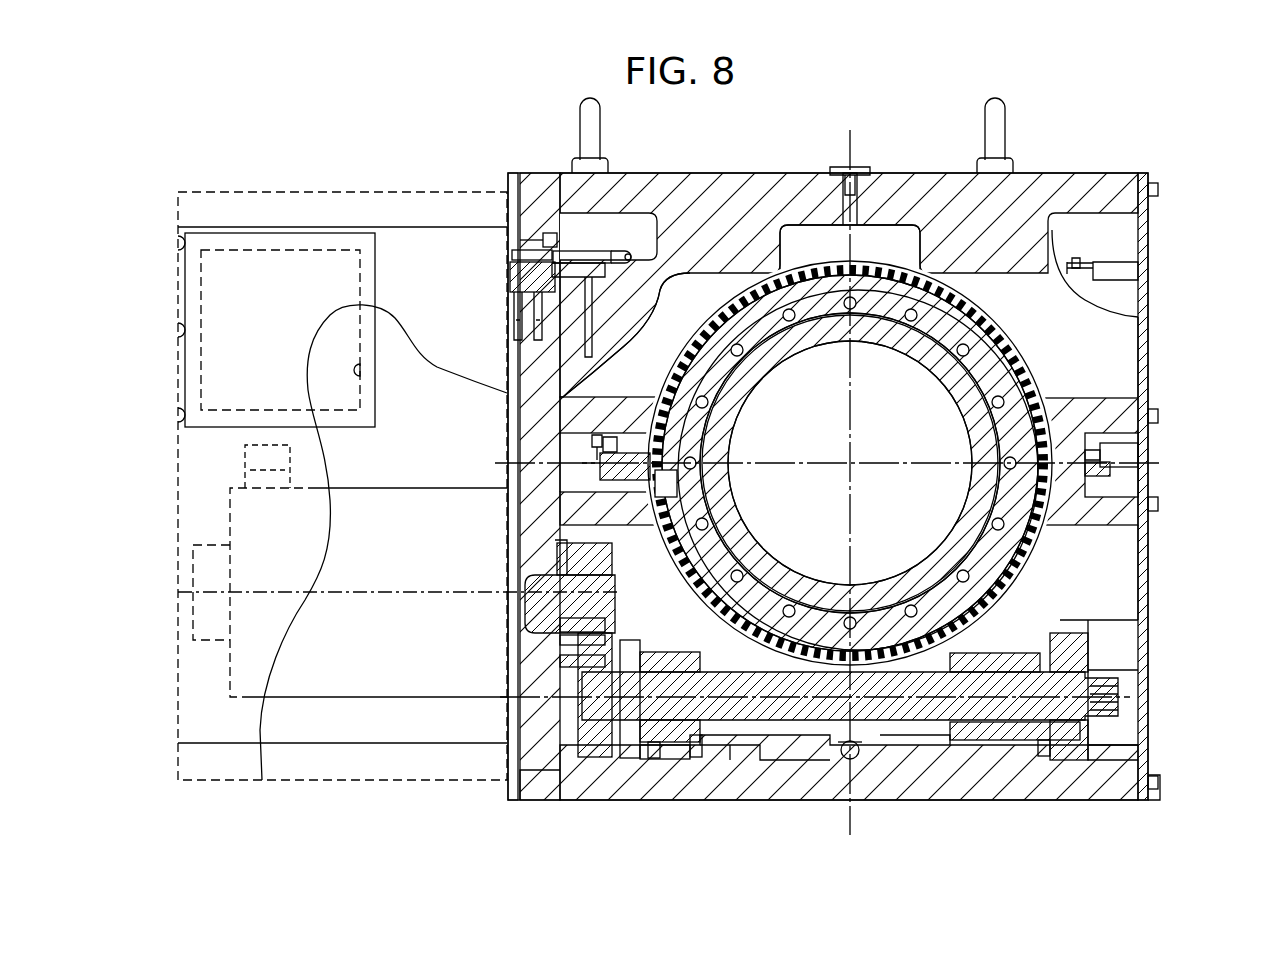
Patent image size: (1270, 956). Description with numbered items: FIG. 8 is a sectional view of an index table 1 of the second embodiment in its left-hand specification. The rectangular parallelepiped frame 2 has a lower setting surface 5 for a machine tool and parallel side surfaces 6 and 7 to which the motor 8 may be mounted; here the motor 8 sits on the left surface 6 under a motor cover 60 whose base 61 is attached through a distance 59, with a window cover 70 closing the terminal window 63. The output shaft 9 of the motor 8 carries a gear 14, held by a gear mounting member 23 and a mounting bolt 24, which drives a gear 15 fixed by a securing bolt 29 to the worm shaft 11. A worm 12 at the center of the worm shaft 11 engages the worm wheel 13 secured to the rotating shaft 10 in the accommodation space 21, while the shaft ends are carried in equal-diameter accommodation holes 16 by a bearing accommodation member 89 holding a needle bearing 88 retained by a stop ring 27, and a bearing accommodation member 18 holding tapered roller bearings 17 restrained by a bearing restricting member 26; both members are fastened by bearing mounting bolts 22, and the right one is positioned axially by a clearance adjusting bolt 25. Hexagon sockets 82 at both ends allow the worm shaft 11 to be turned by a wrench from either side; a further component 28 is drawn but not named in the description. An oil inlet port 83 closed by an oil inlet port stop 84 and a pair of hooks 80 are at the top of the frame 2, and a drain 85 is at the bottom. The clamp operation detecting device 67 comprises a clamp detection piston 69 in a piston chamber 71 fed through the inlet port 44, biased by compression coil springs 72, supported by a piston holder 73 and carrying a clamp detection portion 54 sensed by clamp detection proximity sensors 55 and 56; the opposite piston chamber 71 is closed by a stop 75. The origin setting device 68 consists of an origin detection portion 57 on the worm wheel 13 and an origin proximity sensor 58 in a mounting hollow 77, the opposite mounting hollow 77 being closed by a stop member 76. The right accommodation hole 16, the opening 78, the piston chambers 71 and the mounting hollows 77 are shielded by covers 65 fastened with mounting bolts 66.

The index table 1 is at (443, 132).
The frame 2 is at (1052, 172).
The setting surface 5 is at (580, 800).
The surface 6 is at (545, 800).
The surface 7 is at (1155, 795).
The motor 8 is at (420, 488).
The output shaft 9 is at (527, 585).
The rotating shaft 10 is at (925, 362).
The worm shaft 11 is at (578, 712).
The worm 12 is at (900, 745).
The worm wheel 13 is at (1018, 345).
The gear 14 is at (560, 622).
The gear 15 is at (560, 642).
The accommodation holes 16 is at (762, 760).
The tapered roller bearings 17 is at (1035, 653).
The bearing accommodation member 18 is at (990, 740).
The accommodation space 21 is at (702, 313).
The bearing mounting bolts 22 is at (655, 758).
The gear mounting member 23 is at (557, 548).
The mounting bolt 24 is at (612, 558).
The clearance adjusting bolt 25 is at (1125, 632).
The bearing restricting member 26 is at (1088, 668).
The stop ring 27 is at (672, 652).
The collar 28 is at (620, 758).
The securing bolt 29 is at (560, 662).
The inlet port 44 is at (630, 256).
The clamp detection portion 54 is at (512, 255).
The clamp detection proximity sensor 55 is at (510, 280).
The clamp detection proximity sensor 56 is at (510, 290).
The origin detection portion 57 is at (677, 483).
The origin proximity sensor 58 is at (605, 468).
The distance 59 is at (541, 173).
The motor cover 60 is at (287, 191).
The base 61 is at (513, 173).
The terminal window 63 is at (362, 370).
The covers 65 is at (1150, 350).
The mounting bolts 66 is at (1160, 190).
The clamp operation detecting device 67 is at (493, 317).
The origin setting device 68 is at (576, 455).
The clamp detection piston 69 is at (600, 251).
The window cover 70 is at (375, 260).
The piston chamber 71 is at (588, 290).
The compression coil springs 72 is at (620, 318).
The piston holder 73 is at (543, 240).
The stop 75 is at (1100, 258).
The stop member 76 is at (1095, 470).
The mounting hollows 77 is at (600, 433).
The opening 78 is at (1125, 368).
The hooks 80 is at (601, 125).
The hexagon sockets 82 is at (1120, 698).
The oil inlet port 83 is at (845, 225).
The oil inlet port stop 84 is at (856, 170).
The drain 85 is at (845, 758).
The needle bearing 88 is at (688, 759).
The bearing accommodation member 89 is at (700, 757).